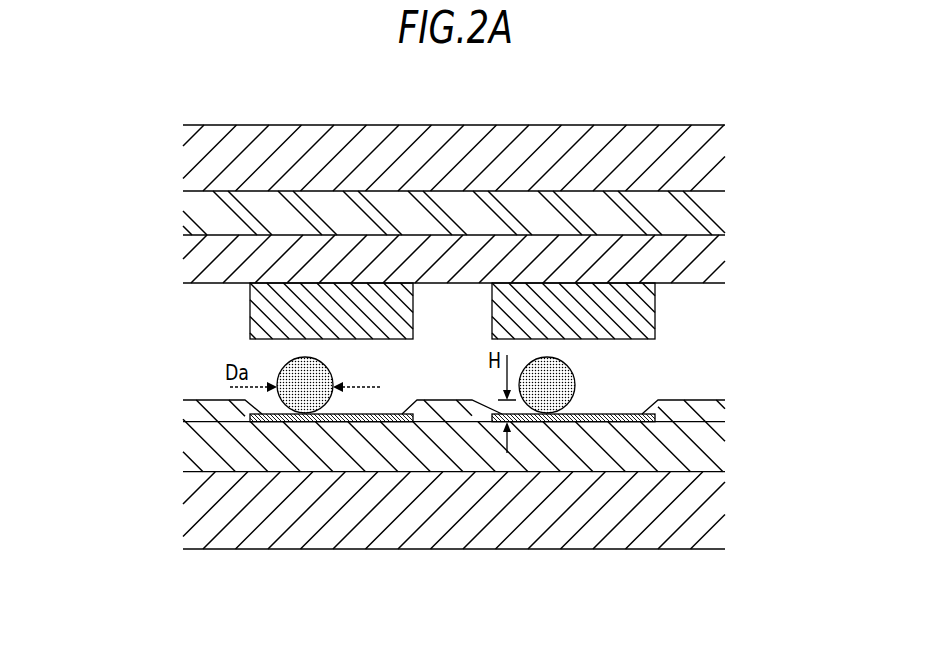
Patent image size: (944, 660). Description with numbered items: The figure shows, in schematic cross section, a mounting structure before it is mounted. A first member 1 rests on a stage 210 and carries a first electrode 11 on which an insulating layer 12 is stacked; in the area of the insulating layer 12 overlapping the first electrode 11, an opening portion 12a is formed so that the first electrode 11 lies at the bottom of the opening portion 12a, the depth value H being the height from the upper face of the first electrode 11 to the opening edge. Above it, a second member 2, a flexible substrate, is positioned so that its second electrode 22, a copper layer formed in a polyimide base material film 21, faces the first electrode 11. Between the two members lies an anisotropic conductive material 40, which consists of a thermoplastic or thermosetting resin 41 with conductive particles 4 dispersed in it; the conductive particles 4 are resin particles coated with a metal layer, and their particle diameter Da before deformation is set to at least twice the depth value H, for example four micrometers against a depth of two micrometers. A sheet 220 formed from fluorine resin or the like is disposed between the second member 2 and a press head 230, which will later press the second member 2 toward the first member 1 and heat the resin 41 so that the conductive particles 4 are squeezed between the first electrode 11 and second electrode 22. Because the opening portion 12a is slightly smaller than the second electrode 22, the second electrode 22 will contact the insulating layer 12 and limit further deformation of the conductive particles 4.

The first member 1 is at (474, 476).
The first electrode 11 is at (281, 422).
The insulating layer 12 is at (226, 420).
The opening portion 12a is at (387, 405).
The second member 2 is at (415, 287).
The base material film 21 is at (172, 235).
The second electrode 22 is at (248, 318).
The conductive particles 4 is at (308, 413).
The anisotropic conductive material 40 is at (180, 348).
The resin 41 is at (402, 371).
The stage 210 is at (740, 473).
The sheet 220 is at (740, 192).
The press head 230 is at (740, 125).